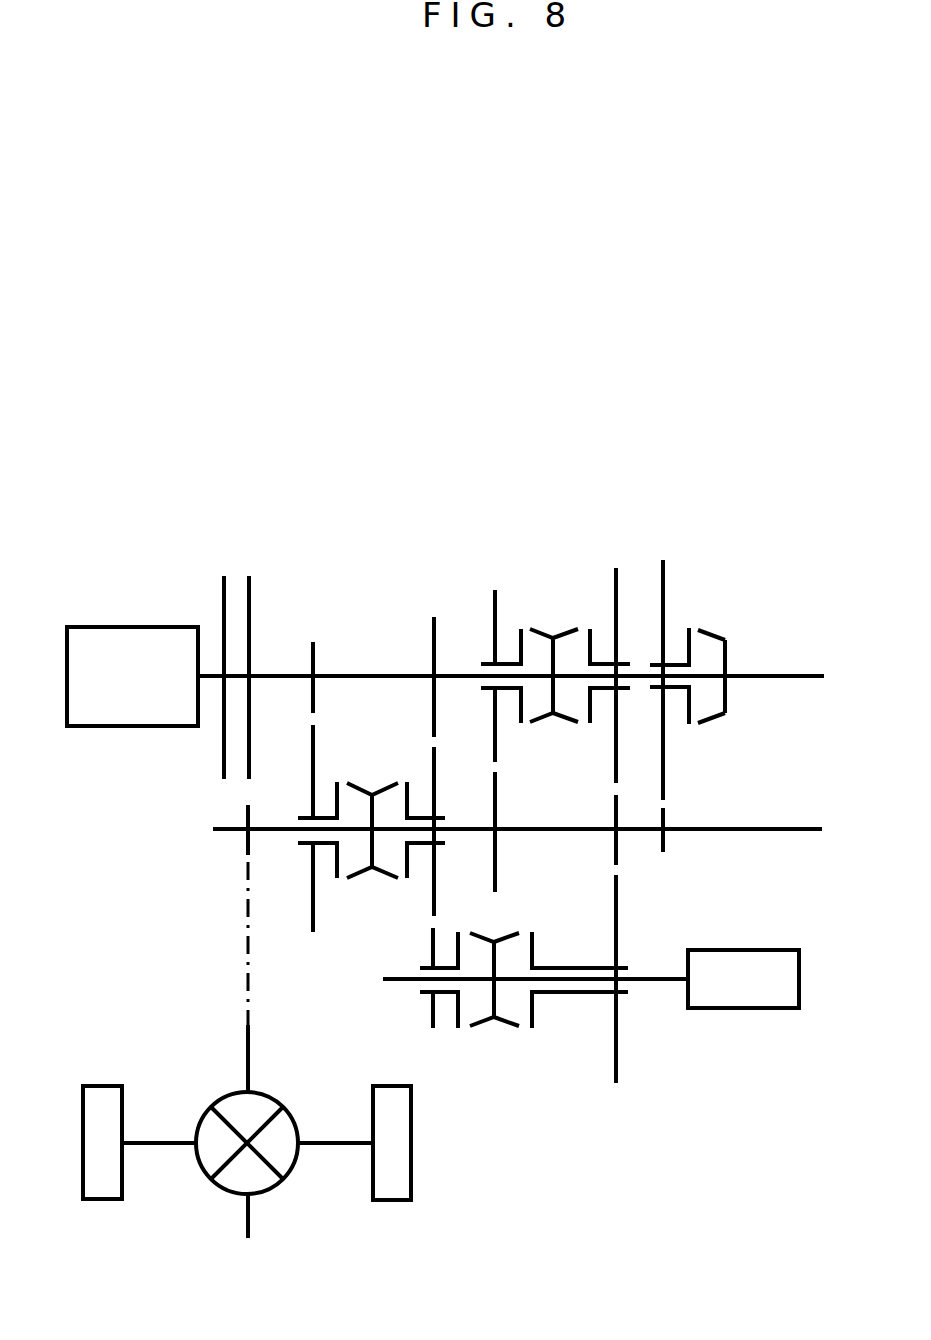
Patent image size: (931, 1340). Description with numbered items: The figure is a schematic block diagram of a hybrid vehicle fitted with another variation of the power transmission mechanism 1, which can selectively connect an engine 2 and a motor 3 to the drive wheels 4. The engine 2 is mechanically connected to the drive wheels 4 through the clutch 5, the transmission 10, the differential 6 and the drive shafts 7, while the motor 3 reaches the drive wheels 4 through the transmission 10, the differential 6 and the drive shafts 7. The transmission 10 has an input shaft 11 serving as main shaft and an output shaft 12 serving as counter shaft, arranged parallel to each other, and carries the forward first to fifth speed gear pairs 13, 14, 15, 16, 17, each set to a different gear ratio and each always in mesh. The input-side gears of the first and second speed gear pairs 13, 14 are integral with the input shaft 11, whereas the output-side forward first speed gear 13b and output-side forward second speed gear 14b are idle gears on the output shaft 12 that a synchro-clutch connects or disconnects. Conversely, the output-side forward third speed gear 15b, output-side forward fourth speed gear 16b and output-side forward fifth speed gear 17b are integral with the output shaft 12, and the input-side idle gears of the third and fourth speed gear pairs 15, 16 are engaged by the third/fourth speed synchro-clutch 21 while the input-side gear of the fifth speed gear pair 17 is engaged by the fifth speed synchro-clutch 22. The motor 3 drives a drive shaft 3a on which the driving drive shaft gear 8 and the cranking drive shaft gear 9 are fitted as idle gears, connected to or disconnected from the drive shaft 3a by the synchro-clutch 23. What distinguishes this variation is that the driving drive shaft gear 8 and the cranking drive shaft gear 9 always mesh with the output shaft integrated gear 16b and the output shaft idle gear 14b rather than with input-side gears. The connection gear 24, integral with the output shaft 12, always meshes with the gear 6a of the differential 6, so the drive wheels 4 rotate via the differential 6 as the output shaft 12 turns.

The power transmission mechanism 1 is at (543, 246).
The engine 2 is at (122, 627).
The motor 3 is at (733, 1010).
The drive shaft 3a is at (658, 977).
The drive wheels 4 is at (100, 1200).
The clutch 5 is at (228, 578).
The differential 6 is at (225, 1193).
The gear 6a is at (247, 1055).
The drive shafts 7 is at (157, 1146).
The driving drive shaft gear 8 is at (616, 1062).
The cranking drive shaft gear 9 is at (432, 1013).
The transmission 10 is at (508, 1180).
The input shaft 11 is at (798, 676).
The output shaft 12 is at (785, 829).
The forward first speed gear pair 13 is at (313, 640).
The output-side forward first speed gear 13b is at (313, 905).
The forward second speed gear pair 14 is at (434, 615).
The output-side forward second speed gear 14b is at (432, 773).
The forward third speed gear pair 15 is at (495, 588).
The output-side forward third speed gear 15b is at (497, 808).
The forward fourth speed gear pair 16 is at (616, 583).
The output-side forward fourth speed gear 16b is at (614, 855).
The forward fifth speed gear pair 17 is at (664, 566).
The output-side forward fifth speed gear 17b is at (664, 818).
The third/fourth speed synchro-clutch 21 is at (545, 628).
The fifth speed synchro-clutch 22 is at (712, 630).
The synchro-clutch 23 is at (510, 1026).
The connection gear 24 is at (245, 843).